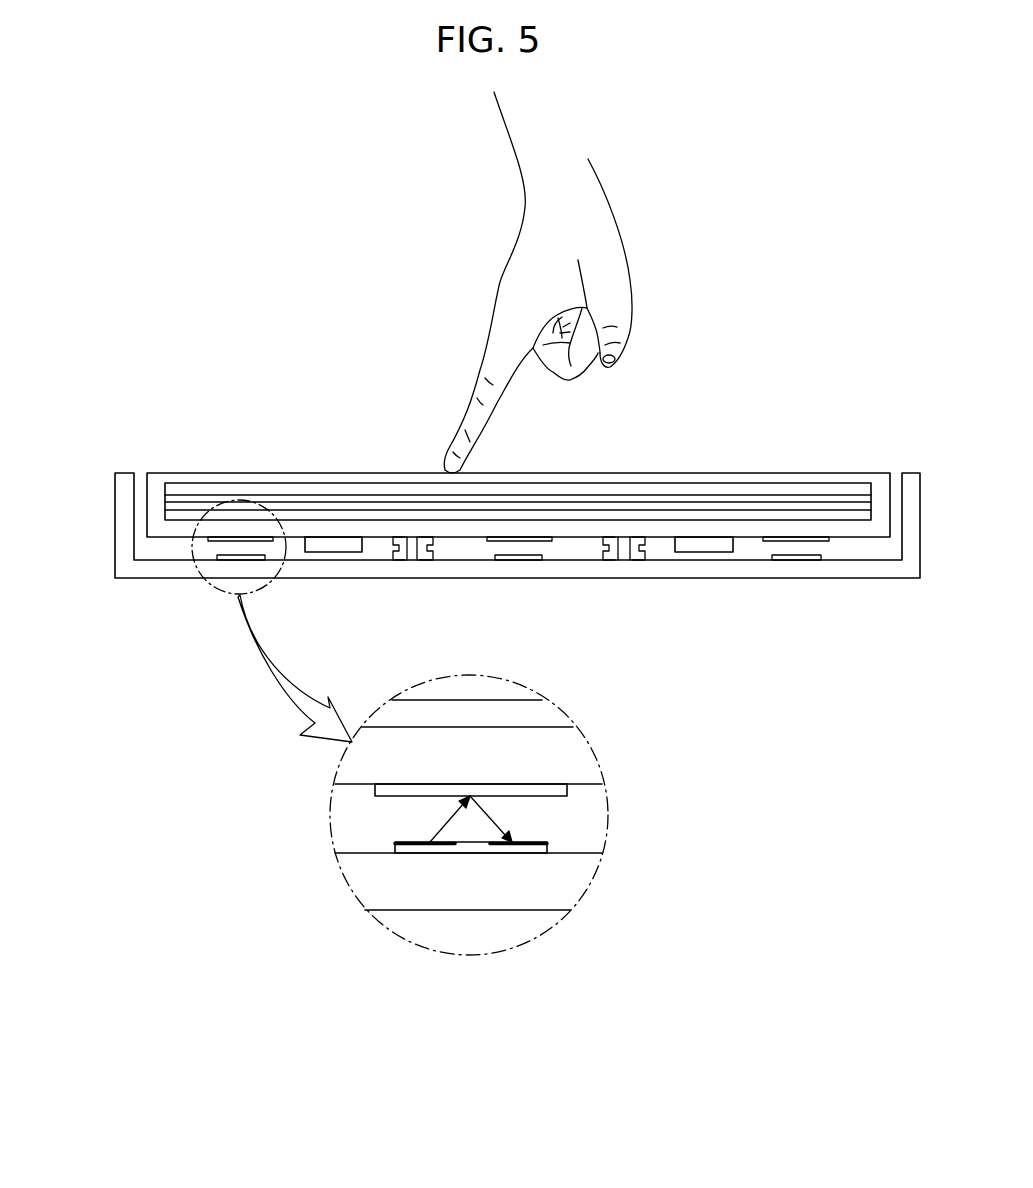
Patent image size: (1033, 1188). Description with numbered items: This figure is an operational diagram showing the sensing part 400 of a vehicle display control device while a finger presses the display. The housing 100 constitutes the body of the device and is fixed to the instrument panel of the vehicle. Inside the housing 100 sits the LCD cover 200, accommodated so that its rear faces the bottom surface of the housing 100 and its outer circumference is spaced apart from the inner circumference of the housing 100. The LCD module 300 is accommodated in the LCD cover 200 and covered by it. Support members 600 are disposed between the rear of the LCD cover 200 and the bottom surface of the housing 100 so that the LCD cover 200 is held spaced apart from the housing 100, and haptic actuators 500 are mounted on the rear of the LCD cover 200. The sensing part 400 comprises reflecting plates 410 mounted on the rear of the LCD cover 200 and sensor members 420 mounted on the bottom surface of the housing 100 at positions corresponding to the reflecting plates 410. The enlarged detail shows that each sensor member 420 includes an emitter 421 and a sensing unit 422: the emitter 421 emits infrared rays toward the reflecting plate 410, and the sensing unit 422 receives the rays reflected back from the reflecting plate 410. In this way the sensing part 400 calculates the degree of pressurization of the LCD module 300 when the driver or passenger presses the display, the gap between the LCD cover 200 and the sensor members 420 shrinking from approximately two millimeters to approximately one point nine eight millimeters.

The housing 100 is at (567, 590).
The LCD cover 200 is at (139, 497).
The LCD module 300 is at (685, 462).
The sensing part 400 is at (553, 695).
The reflecting plate 410 is at (830, 541).
The sensor member 420 is at (519, 704).
The emitter 421 is at (413, 838).
The sensing unit 422 is at (532, 838).
The haptic actuator 500 is at (701, 572).
The support member 600 is at (623, 572).